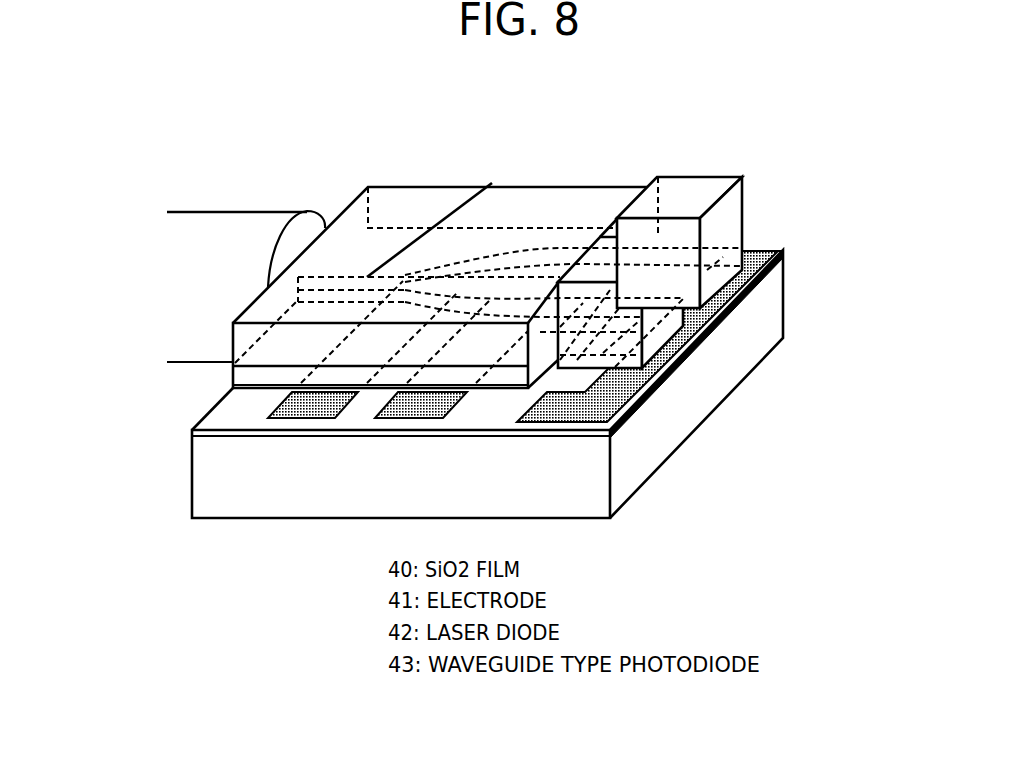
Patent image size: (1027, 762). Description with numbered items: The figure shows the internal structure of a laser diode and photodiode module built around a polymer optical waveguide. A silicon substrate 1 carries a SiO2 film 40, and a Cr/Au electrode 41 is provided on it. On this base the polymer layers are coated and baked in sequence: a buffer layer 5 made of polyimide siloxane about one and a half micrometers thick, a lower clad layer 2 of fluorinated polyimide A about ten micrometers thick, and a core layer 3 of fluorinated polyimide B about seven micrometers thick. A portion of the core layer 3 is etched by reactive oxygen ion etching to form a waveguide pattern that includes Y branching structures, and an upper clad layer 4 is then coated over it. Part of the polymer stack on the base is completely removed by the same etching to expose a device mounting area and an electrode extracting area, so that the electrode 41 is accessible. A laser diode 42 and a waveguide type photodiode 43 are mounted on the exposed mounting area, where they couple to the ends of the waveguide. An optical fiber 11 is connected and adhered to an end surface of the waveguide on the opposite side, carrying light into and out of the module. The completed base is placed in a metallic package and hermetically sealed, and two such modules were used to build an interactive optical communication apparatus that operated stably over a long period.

The silicon substrate 1 is at (205, 483).
The lower clad layer 2 is at (233, 372).
The core layer 3 is at (492, 183).
The upper clad layer 4 is at (540, 192).
The buffer layer 5 is at (233, 388).
The optical fiber 11 is at (253, 218).
The SiO2 film 40 is at (195, 436).
The electrode 41 is at (537, 415).
The laser diode 42 is at (653, 325).
The waveguide type photodiode 43 is at (728, 208).